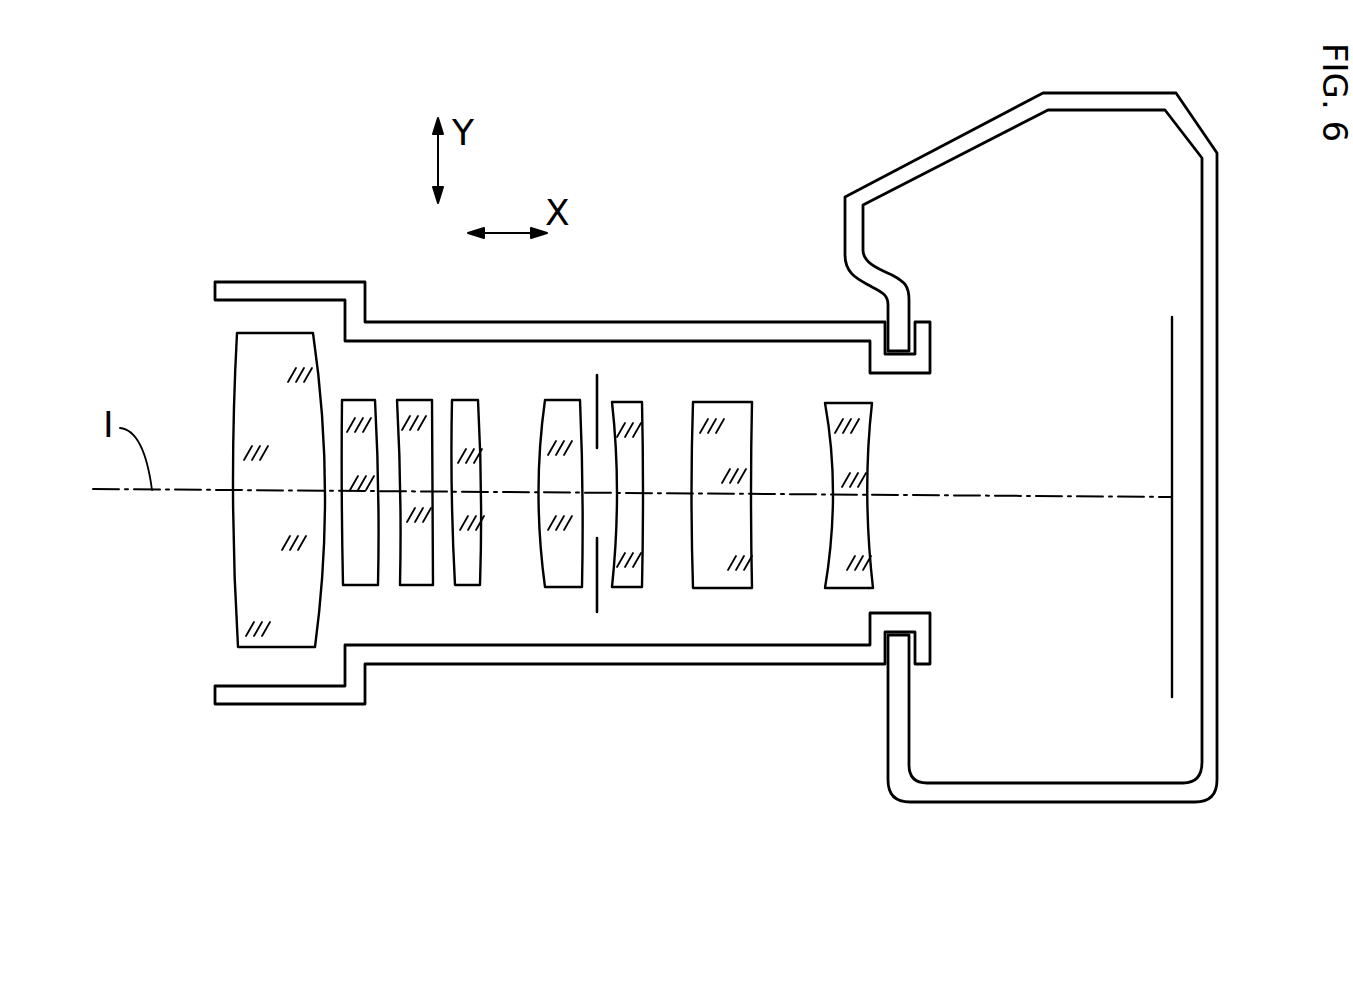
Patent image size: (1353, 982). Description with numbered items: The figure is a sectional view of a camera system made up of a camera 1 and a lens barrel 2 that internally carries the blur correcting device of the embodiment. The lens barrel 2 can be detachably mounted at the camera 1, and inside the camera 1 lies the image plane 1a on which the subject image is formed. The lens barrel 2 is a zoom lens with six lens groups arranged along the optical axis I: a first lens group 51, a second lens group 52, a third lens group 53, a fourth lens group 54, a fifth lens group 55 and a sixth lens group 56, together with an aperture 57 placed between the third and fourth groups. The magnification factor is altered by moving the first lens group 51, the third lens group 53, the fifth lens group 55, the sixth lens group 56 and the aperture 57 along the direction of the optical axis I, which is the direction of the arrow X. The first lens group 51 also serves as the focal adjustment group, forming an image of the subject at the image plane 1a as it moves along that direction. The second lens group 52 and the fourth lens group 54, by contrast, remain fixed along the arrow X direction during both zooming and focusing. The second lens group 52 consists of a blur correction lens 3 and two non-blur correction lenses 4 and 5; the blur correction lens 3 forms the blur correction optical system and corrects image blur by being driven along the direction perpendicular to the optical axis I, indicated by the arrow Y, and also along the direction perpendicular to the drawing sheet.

The camera 1 is at (1190, 133).
The image plane 1a is at (1172, 372).
The lens barrel 2 is at (326, 290).
The blur correction lens 3 is at (412, 585).
The non-blur correction lens 4 is at (358, 585).
The non-blur correction lens 5 is at (465, 585).
The first lens group 51 is at (283, 637).
The second lens group 52 is at (422, 611).
The third lens group 53 is at (563, 587).
The fourth lens group 54 is at (630, 588).
The fifth lens group 55 is at (727, 588).
The sixth lens group 56 is at (830, 588).
The aperture 57 is at (598, 600).